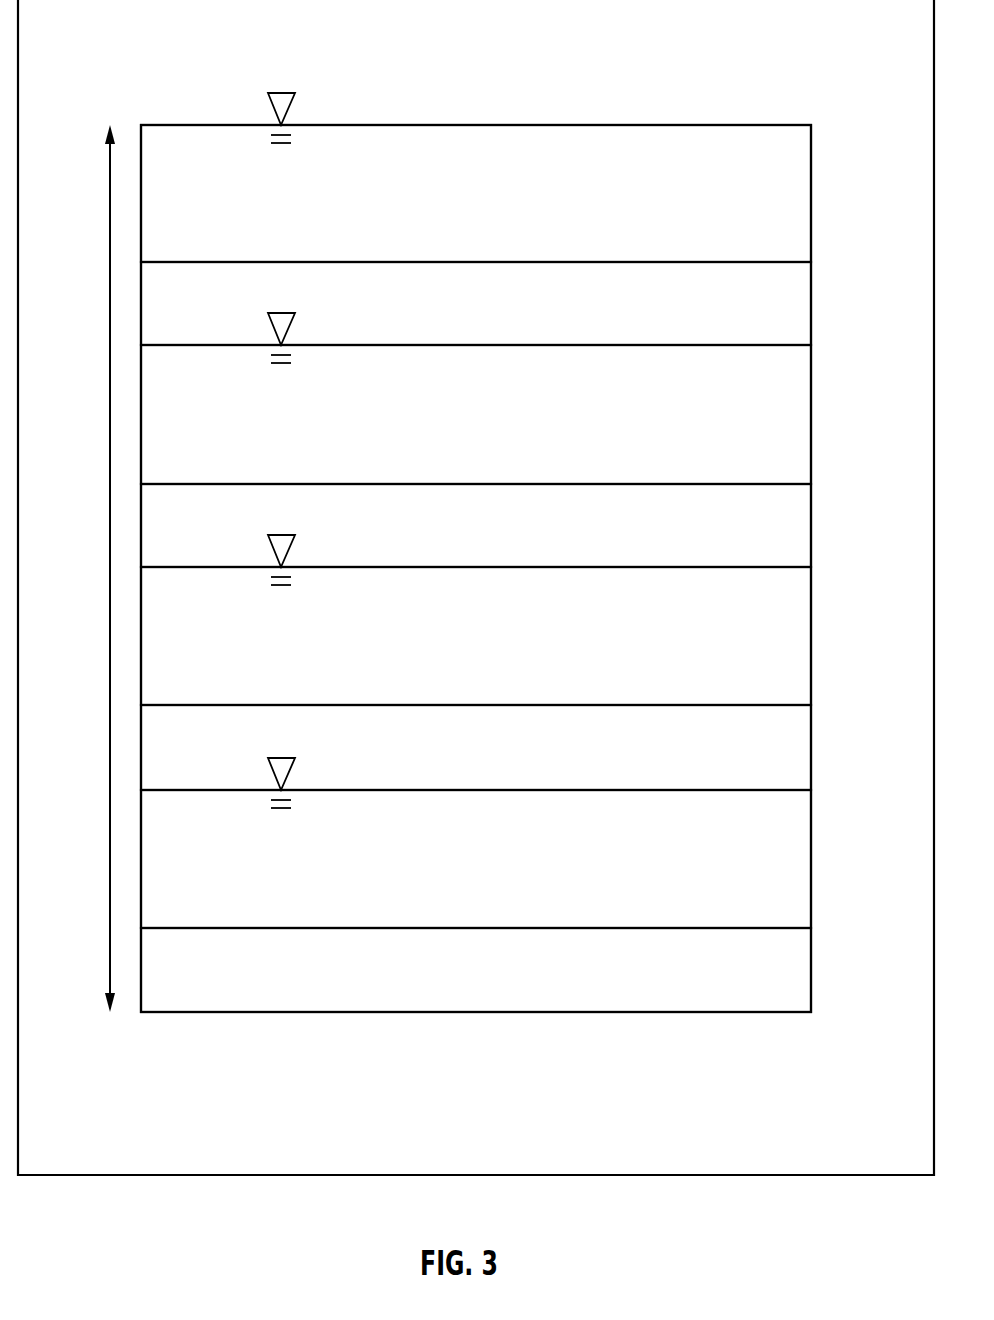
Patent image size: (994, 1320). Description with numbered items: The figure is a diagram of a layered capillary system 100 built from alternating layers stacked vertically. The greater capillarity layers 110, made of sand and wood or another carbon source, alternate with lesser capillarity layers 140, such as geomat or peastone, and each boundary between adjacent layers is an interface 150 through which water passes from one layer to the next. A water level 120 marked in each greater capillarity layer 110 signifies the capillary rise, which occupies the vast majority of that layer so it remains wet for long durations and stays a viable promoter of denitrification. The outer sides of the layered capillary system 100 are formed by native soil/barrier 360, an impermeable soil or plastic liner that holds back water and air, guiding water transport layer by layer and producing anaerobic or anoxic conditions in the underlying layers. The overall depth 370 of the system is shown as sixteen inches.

The layered capillary system 100 is at (617, 34).
The greater capillarity layer 110 is at (497, 904).
The water level 120 is at (297, 78).
The lesser capillarity layer 140 is at (497, 1001).
The interface 150 is at (761, 262).
The native soil/barrier 360 is at (141, 196).
The depth 370 is at (110, 513).